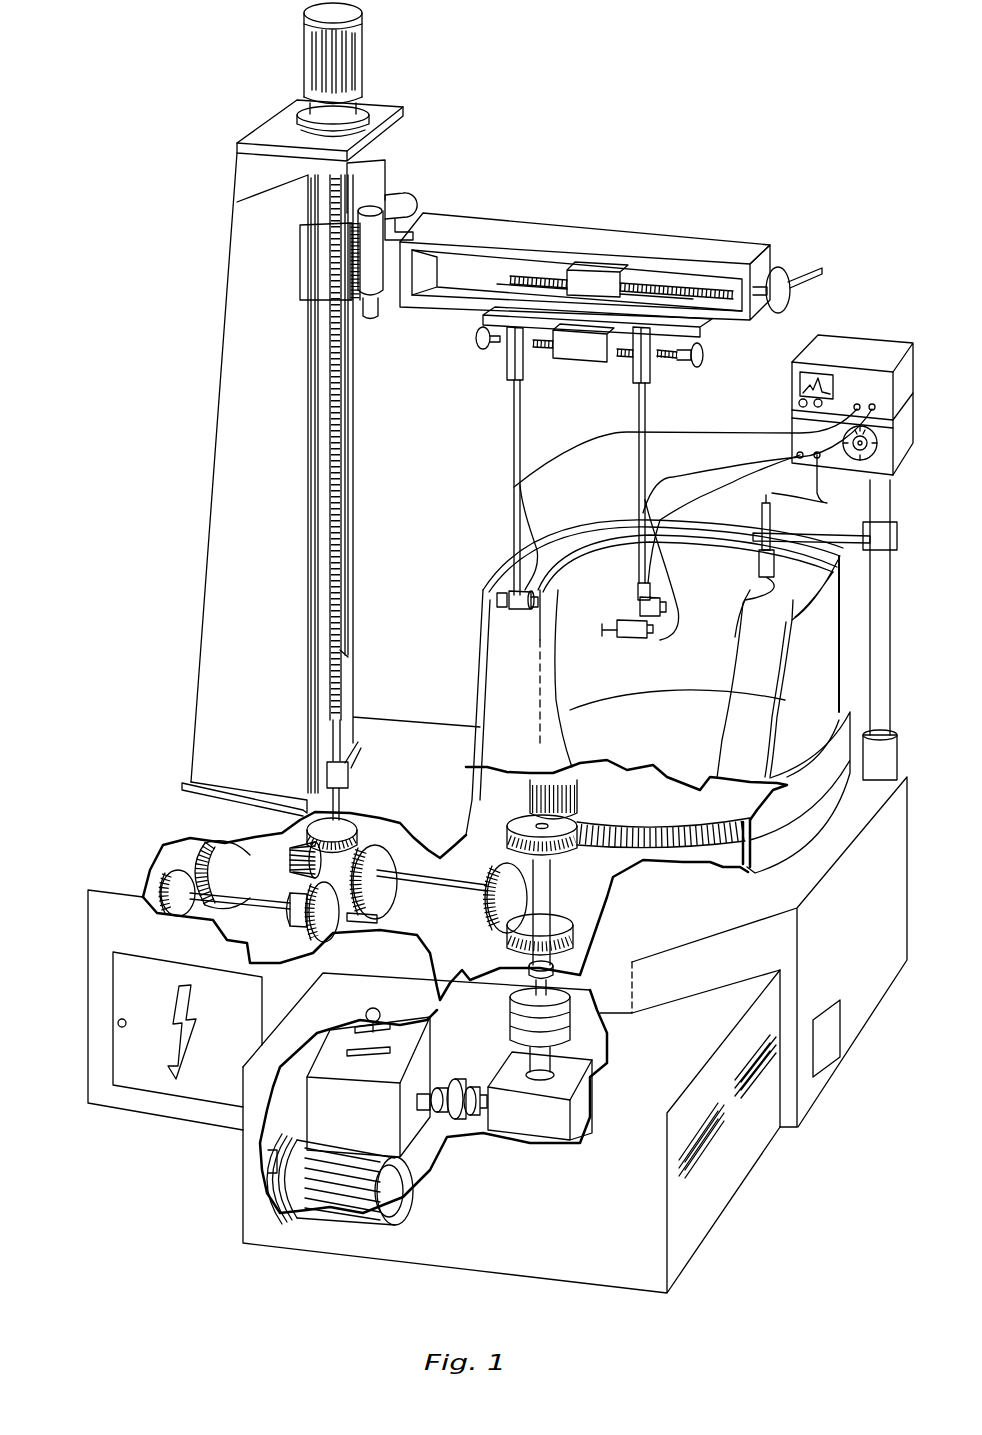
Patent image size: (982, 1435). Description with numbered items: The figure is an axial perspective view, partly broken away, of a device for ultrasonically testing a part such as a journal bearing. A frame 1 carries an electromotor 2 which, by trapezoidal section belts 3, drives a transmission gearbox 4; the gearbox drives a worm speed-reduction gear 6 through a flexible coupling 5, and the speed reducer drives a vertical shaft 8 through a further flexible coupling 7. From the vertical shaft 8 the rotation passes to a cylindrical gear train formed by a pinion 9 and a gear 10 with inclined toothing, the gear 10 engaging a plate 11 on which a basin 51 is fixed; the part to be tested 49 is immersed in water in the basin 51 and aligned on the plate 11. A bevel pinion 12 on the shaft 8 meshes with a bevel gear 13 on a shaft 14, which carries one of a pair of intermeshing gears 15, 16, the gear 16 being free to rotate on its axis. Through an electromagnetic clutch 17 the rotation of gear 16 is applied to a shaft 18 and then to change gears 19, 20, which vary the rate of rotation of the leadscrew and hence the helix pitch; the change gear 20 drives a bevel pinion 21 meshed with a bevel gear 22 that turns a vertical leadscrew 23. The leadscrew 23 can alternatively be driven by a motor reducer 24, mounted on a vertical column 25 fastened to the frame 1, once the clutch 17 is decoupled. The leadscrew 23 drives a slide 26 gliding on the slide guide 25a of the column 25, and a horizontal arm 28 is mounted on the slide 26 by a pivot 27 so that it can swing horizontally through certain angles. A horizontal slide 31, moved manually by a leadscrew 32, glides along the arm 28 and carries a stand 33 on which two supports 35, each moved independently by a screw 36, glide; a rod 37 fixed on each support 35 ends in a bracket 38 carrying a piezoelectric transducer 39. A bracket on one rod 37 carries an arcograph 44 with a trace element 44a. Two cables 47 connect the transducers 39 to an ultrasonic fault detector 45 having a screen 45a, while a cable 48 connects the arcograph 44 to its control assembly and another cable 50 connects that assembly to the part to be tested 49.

The frame 1 is at (843, 1052).
The electromotor 2 is at (385, 1190).
The trapezoidal section belts 3 is at (290, 1120).
The transmission gearbox 4 is at (430, 1037).
The flexible coupling 5 is at (444, 1080).
The worm speed-reduction gear 6 is at (530, 1135).
The flexible coupling 7 is at (560, 1032).
The vertical shaft 8 is at (551, 895).
The pinion 9 is at (547, 862).
The gear 10 is at (530, 793).
The plate 11 is at (767, 820).
The bevel pinion 12 is at (560, 925).
The bevel gear 13 is at (490, 910).
The shaft 14 is at (445, 880).
The gear 15 is at (380, 838).
The gear 16 is at (335, 945).
The electromagnetic clutch 17 is at (295, 932).
The shaft 18 is at (250, 906).
The change gear 19 is at (163, 878).
The change gear 20 is at (217, 850).
The bevel pinion 21 is at (288, 850).
The bevel gear 22 is at (342, 822).
The leadscrew 23 is at (343, 512).
The motor reducer 24 is at (356, 57).
The vertical column 25 is at (228, 516).
The slide guide 25a is at (322, 555).
The slide 26 is at (402, 200).
The pivot 27 is at (373, 205).
The horizontal arm 28 is at (510, 237).
The horizontal slide 31 is at (597, 280).
The leadscrew 32 is at (687, 283).
The stand 33 is at (476, 340).
The support 35 is at (512, 378).
The screw 36 is at (543, 350).
The rod 37 is at (514, 470).
The bracket 38 is at (505, 607).
The piezoelectric transducer 39 is at (523, 612).
The arcograph 44 is at (647, 640).
The trace element 44a is at (597, 635).
The ultrasonic fault detector 45 is at (887, 355).
The screen 45a is at (823, 377).
The cables 47 is at (733, 446).
The cable 48 is at (733, 484).
The part to be tested 49 is at (547, 673).
The cable 50 is at (826, 504).
The basin 51 is at (495, 585).